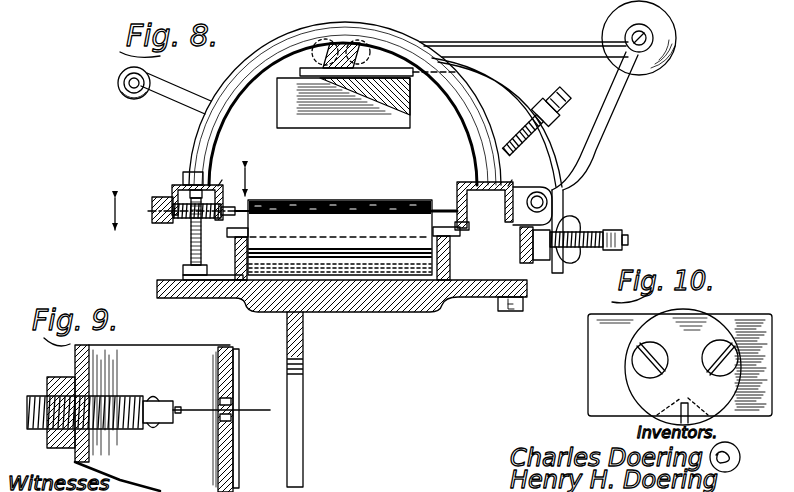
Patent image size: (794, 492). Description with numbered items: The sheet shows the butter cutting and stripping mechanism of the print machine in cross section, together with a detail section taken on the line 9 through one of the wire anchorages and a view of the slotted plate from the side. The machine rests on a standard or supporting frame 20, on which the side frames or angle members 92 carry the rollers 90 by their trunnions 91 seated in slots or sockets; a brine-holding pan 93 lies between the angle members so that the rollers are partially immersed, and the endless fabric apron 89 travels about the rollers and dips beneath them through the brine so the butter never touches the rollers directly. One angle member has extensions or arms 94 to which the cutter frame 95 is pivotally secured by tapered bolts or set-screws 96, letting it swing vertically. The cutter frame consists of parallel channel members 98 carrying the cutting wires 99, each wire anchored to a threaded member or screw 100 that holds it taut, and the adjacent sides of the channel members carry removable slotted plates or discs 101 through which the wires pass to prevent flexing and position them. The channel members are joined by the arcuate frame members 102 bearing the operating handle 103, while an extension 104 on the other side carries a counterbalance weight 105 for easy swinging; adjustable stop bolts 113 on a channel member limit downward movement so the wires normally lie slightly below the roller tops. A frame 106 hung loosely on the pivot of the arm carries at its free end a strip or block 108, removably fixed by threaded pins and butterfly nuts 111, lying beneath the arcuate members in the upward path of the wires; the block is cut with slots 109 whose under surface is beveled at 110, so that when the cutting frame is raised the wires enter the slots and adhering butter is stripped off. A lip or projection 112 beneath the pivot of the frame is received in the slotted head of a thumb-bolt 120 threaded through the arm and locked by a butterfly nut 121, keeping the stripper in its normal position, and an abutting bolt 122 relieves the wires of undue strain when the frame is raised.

In FIG. 8, the section line 9— 9 is at (180, 199).
In FIG. 8, the standard or supporting frame 20 is at (305, 352).
In FIG. 8, the endless member or apron 89 is at (374, 203).
In FIG. 8, the rollers 90 is at (323, 226).
In FIG. 8, the trunnions 91 is at (228, 233).
In FIG. 8, the side frames or angle members 92 is at (212, 253).
In FIG. 8, the brine-holding receptacle or pan 93 is at (424, 304).
In FIG. 8, the extensions or arms 94 is at (555, 277).
In FIG. 8, the cutter frame 95 is at (486, 124).
In FIG. 8, the tapered bolts or set-screws 96 is at (549, 202).
In FIG. 8, the channel members 98 is at (214, 185).
In FIG. 9, the channel members 98 is at (134, 356).
In FIG. 10, the channel members 98 is at (590, 388).
In FIG. 8, the cutting wires 99 is at (252, 199).
In FIG. 9, the cutting wires 99 is at (268, 400).
In FIG. 10, the cutting wires 99 is at (686, 403).
In FIG. 8, the threaded member or screw 100 is at (171, 196).
In FIG. 9, the threaded member or screw 100 is at (143, 396).
In FIG. 8, the plates or discs 101 is at (229, 186).
In FIG. 9, the plates or discs 101 is at (240, 462).
In FIG. 10, the plates or discs 101 is at (716, 322).
In FIG. 8, the arcuate frame members 102 is at (228, 76).
In FIG. 8, the operating handle 103 is at (133, 100).
In FIG. 8, the extension 104 is at (606, 120).
In FIG. 8, the counterbalance weight 105 is at (651, 73).
In FIG. 8, the frame 106 is at (600, 131).
In FIG. 8, the strip or block 108 is at (411, 106).
In FIG. 8, the slots 109 is at (277, 83).
In FIG. 8, the taper or bevel 110 is at (378, 108).
In FIG. 8, the threaded pins with butter-fly nuts 111 is at (367, 48).
In FIG. 8, the lip or projection 112 is at (553, 223).
In FIG. 8, the stop bolts 113 is at (192, 232).
In FIG. 8, the thumb-bolt 120 is at (623, 233).
In FIG. 8, the butterfly nut 121 is at (573, 253).
In FIG. 8, the abutting bolt 122 is at (551, 95).